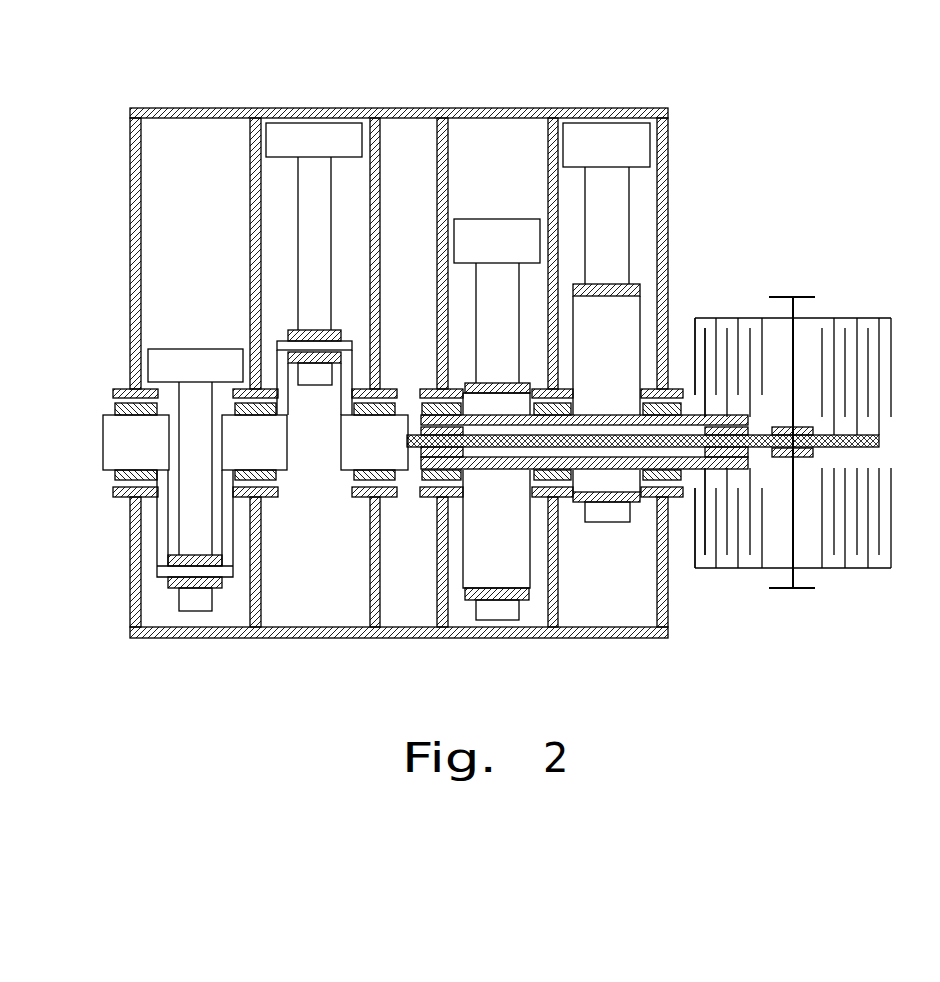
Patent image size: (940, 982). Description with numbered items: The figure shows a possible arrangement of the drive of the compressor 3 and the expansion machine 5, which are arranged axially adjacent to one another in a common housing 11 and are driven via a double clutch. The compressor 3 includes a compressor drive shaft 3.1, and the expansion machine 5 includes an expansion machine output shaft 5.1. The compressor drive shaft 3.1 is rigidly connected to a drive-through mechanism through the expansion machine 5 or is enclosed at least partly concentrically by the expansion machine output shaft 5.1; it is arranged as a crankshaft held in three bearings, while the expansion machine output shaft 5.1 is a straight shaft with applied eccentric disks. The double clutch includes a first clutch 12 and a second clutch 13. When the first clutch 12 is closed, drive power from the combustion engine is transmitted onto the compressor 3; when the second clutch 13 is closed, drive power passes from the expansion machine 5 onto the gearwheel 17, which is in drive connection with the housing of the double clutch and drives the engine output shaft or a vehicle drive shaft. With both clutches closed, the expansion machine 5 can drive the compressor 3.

The compressor 3 is at (259, 85).
The compressor drive shaft 3.1 is at (103, 443).
The expansion machine 5 is at (559, 86).
The expansion machine output shaft 5.1 is at (456, 470).
The common housing 11 is at (143, 637).
The first clutch 12 is at (858, 573).
The second clutch 13 is at (729, 577).
The gearwheel 17 is at (803, 293).